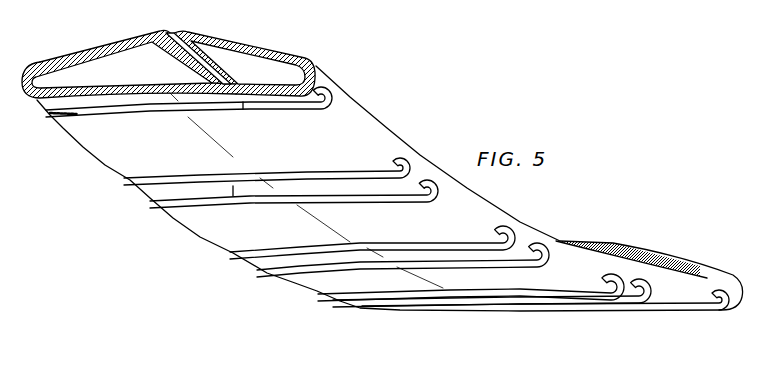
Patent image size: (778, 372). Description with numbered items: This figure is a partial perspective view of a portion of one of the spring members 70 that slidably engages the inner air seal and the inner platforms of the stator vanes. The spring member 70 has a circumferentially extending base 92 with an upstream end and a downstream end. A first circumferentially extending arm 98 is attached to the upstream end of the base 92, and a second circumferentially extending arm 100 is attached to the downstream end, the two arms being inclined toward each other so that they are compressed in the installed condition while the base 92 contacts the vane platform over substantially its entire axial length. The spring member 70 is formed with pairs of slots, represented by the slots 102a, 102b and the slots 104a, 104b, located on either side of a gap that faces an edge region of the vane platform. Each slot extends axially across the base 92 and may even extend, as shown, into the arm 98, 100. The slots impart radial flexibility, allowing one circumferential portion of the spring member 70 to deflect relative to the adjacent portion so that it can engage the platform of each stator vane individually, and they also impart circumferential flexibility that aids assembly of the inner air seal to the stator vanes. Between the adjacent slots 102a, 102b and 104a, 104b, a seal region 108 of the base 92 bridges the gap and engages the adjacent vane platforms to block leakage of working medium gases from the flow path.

The spring member 70 is at (409, 122).
The base 92 is at (167, 82).
The first circumferentially extending arm 98 is at (112, 42).
The second circumferentially extending arm 100 is at (258, 44).
The slot 102a is at (142, 185).
The slot 102b is at (167, 211).
The slot 104a is at (243, 252).
The slot 104b is at (273, 272).
The seal region 108 is at (235, 187).